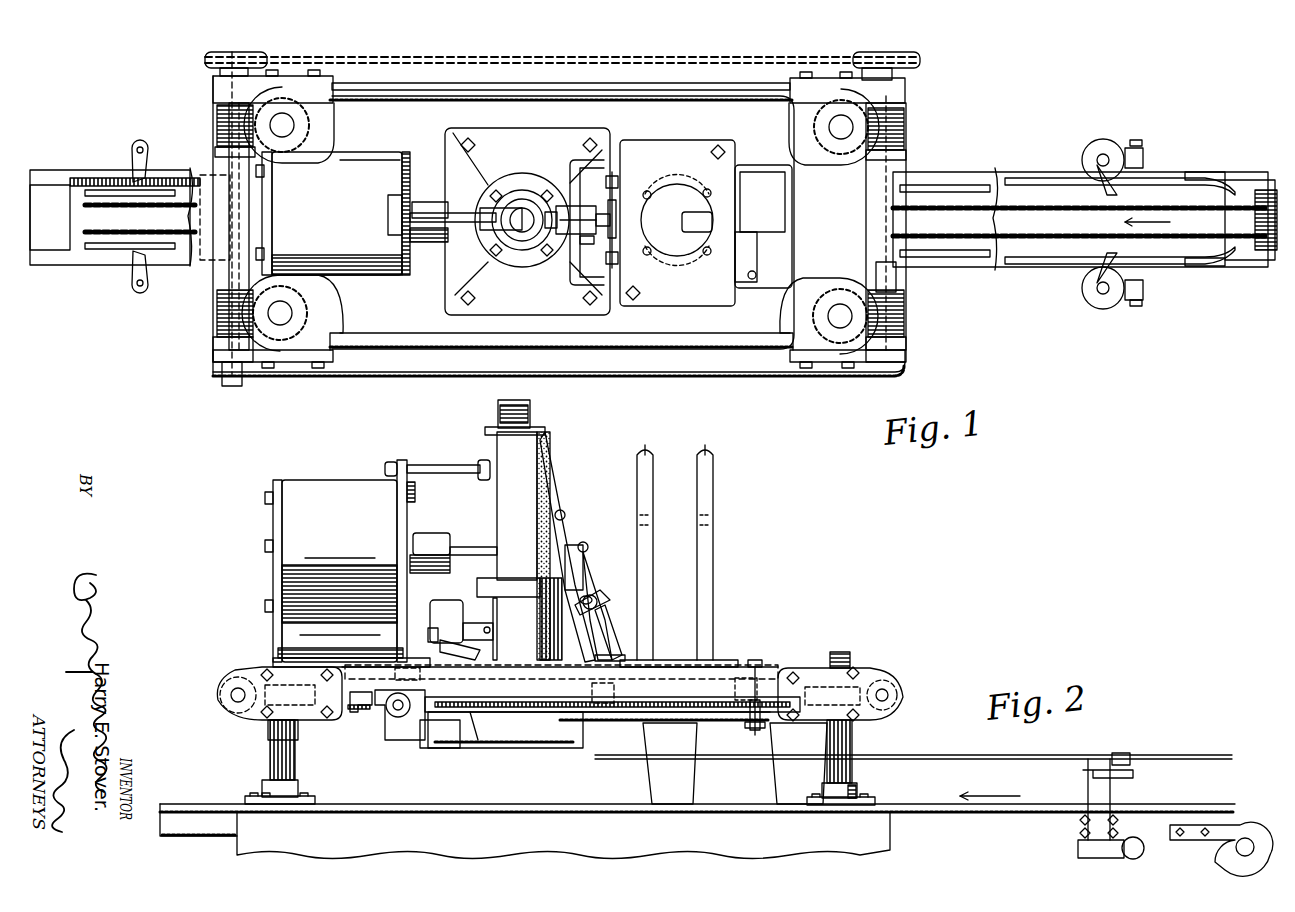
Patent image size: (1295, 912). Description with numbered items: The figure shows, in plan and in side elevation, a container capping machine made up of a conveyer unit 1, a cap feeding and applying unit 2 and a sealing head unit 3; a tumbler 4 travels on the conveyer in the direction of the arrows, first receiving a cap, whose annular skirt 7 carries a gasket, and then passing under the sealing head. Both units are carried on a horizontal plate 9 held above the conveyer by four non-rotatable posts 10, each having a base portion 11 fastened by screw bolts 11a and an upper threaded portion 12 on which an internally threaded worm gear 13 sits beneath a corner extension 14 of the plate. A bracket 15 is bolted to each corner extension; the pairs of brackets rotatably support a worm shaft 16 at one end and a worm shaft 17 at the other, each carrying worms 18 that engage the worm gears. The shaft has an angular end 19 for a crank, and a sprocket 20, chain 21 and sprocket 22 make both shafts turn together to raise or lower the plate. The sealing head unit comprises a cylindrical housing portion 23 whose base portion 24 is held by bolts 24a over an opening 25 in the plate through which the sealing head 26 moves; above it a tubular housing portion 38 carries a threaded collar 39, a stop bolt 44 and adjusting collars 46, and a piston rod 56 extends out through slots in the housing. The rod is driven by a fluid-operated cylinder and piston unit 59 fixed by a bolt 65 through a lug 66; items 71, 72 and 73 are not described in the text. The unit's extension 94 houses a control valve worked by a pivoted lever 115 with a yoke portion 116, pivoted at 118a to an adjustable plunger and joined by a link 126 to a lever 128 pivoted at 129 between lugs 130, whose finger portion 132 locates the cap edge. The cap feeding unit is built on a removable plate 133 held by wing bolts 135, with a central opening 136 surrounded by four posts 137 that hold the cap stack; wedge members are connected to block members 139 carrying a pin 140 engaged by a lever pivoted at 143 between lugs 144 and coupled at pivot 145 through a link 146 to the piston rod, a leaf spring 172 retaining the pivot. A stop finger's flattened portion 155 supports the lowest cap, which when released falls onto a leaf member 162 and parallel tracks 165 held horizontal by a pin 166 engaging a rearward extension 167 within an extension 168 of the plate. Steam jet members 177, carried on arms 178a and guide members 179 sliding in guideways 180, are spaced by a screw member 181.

In FIG. 1, the conveyer unit 1 is at (1055, 235).
In FIG. 1, the cap feeding and applying unit 2 is at (690, 255).
In FIG. 2, the cap feeding and applying unit 2 is at (1116, 814).
In FIG. 1, the sealing head unit 3 is at (521, 268).
In FIG. 2, the tumbler 4 is at (672, 784).
In FIG. 1, the annular skirt 7 is at (590, 395).
In FIG. 1, the plate 9 is at (415, 325).
In FIG. 2, the plate 9 is at (768, 678).
In FIG. 2, the posts 10 is at (296, 760).
In FIG. 2, the base portion 11 is at (300, 784).
In FIG. 2, the screw bolts 11a is at (258, 797).
In FIG. 2, the threaded portion 12 is at (268, 740).
In FIG. 1, the worm gear 13 is at (300, 300).
In FIG. 2, the worm gear 13 is at (255, 675).
In FIG. 1, the corner extension 14 is at (305, 340).
In FIG. 1, the bracket 15 is at (285, 82).
In FIG. 2, the bracket 15 is at (818, 676).
In FIG. 1, the worm shaft 16 is at (888, 280).
In FIG. 2, the worm shaft 16 is at (888, 695).
In FIG. 1, the worm shaft 17 is at (228, 284).
In FIG. 1, the worms 18 is at (222, 310).
In FIG. 2, the worms 18 is at (232, 680).
In FIG. 1, the angular end 19 is at (228, 383).
In FIG. 2, the angular end 19 is at (230, 694).
In FIG. 1, the sprocket 20 is at (222, 66).
In FIG. 1, the chain 21 is at (342, 60).
In FIG. 1, the sprocket 22 is at (905, 62).
In FIG. 2, the housing portion 23 is at (575, 600).
In FIG. 1, the base portion 24 is at (496, 290).
In FIG. 2, the base portion 24 is at (515, 668).
In FIG. 1, the bolts 24a is at (468, 296).
In FIG. 2, the bolts 24a is at (610, 662).
In FIG. 1, the opening 25 is at (596, 274).
In FIG. 2, the sealing head 26 is at (520, 706).
In FIG. 1, the housing portion 38 is at (521, 178).
In FIG. 2, the housing portion 38 is at (505, 498).
In FIG. 2, the collar 39 is at (540, 430).
In FIG. 2, the bolt 44 is at (562, 515).
In FIG. 2, the threaded collars 46 is at (500, 412).
In FIG. 2, the piston rod 56 is at (475, 547).
In FIG. 1, the fluid-operated cylinder and piston unit 59 is at (372, 152).
In FIG. 2, the fluid-operated cylinder and piston unit 59 is at (330, 488).
In FIG. 1, the bolt 65 is at (432, 232).
In FIG. 2, the bolt 65 is at (445, 466).
In FIG. 1, the lug 66 is at (393, 208).
In FIG. 2, the lug 66 is at (403, 460).
In FIG. 1, the motor end plate 71 is at (280, 176).
In FIG. 2, the motor end plate 71 is at (280, 509).
In FIG. 1, the motor flange 72 is at (408, 160).
In FIG. 2, the motor flange 72 is at (408, 505).
In FIG. 1, the coupling 73 is at (428, 208).
In FIG. 2, the coupling 73 is at (435, 538).
In FIG. 2, the extension 94 is at (433, 605).
In FIG. 2, the pivoted lever 115 is at (425, 637).
In FIG. 2, the yoke portion 116 is at (432, 625).
In FIG. 2, the pivotal connection 118a is at (432, 633).
In FIG. 2, the link 126 is at (465, 668).
In FIG. 2, the lever 128 is at (485, 645).
In FIG. 2, the pivot 129 is at (490, 630).
In FIG. 2, the lugs 130 is at (470, 628).
In FIG. 2, the finger portion 132 is at (478, 712).
In FIG. 1, the plate 133 is at (675, 290).
In FIG. 2, the plate 133 is at (720, 660).
In FIG. 1, the wing bolts 135 is at (722, 150).
In FIG. 1, the opening 136 is at (698, 206).
In FIG. 1, the posts 137 is at (712, 192).
In FIG. 2, the posts 137 is at (700, 556).
In FIG. 1, the block members 139 is at (616, 180).
In FIG. 2, the block members 139 is at (612, 690).
In FIG. 1, the pin 140 is at (625, 205).
In FIG. 2, the pivot 143 is at (598, 600).
In FIG. 1, the lugs 144 is at (575, 208).
In FIG. 2, the pivot 145 is at (588, 547).
In FIG. 2, the link 146 is at (568, 548).
In FIG. 1, the flattened portion 155 is at (670, 192).
In FIG. 1, the leaf member 162 is at (686, 222).
In FIG. 2, the tracks 165 is at (615, 718).
In FIG. 2, the pin 166 is at (752, 735).
In FIG. 2, the rearward extension 167 is at (752, 722).
In FIG. 1, the extension 168 is at (748, 246).
In FIG. 2, the extension 168 is at (735, 686).
In FIG. 2, the leaf spring 172 is at (604, 612).
In FIG. 2, the steam jet members 177 is at (556, 736).
In FIG. 2, the arms 178a is at (440, 735).
In FIG. 2, the guide members 179 is at (395, 718).
In FIG. 2, the guideways 180 is at (380, 716).
In FIG. 2, the screw member 181 is at (400, 715).